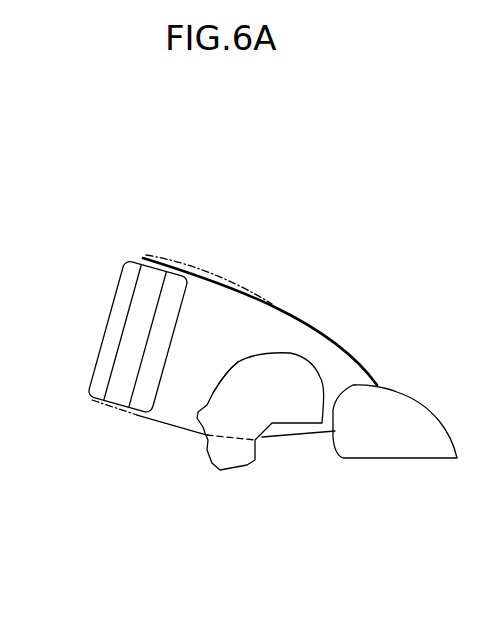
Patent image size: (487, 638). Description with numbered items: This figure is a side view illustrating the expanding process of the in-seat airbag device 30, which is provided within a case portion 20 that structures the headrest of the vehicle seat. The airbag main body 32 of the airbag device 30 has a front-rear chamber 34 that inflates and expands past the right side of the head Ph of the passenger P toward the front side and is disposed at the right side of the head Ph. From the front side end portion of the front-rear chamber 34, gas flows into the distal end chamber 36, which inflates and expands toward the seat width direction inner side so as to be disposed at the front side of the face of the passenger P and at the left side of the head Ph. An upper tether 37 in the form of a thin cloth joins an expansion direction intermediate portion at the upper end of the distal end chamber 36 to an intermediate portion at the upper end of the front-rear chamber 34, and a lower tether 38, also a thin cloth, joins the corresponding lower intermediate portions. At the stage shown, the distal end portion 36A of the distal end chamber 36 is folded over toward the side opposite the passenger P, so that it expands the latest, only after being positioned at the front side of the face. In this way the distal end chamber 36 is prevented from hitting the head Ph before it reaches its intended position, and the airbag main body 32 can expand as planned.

The case portion 20 is at (408, 396).
The in-seat airbag device 30 is at (356, 343).
The airbag main body 32 is at (132, 259).
The front-rear chamber 34 is at (215, 337).
The distal end chamber 36 is at (152, 402).
The distal end portion 36A is at (115, 388).
The upper tether 37 is at (185, 267).
The lower tether 38 is at (92, 417).
The passenger P is at (297, 349).
The head Ph is at (258, 367).